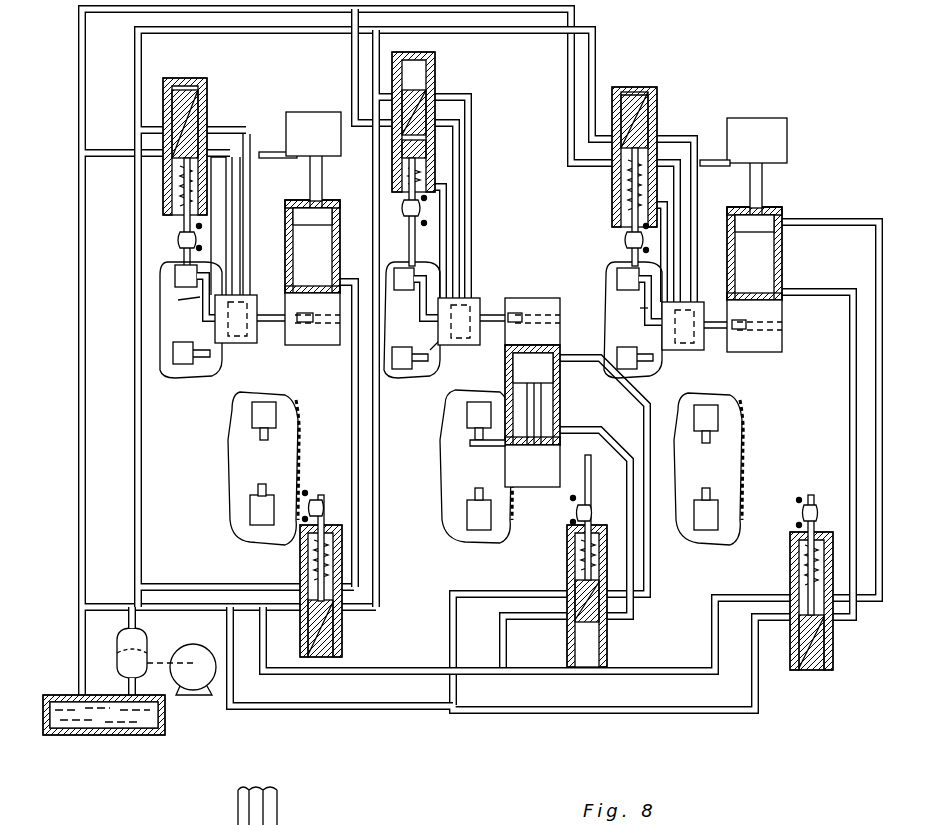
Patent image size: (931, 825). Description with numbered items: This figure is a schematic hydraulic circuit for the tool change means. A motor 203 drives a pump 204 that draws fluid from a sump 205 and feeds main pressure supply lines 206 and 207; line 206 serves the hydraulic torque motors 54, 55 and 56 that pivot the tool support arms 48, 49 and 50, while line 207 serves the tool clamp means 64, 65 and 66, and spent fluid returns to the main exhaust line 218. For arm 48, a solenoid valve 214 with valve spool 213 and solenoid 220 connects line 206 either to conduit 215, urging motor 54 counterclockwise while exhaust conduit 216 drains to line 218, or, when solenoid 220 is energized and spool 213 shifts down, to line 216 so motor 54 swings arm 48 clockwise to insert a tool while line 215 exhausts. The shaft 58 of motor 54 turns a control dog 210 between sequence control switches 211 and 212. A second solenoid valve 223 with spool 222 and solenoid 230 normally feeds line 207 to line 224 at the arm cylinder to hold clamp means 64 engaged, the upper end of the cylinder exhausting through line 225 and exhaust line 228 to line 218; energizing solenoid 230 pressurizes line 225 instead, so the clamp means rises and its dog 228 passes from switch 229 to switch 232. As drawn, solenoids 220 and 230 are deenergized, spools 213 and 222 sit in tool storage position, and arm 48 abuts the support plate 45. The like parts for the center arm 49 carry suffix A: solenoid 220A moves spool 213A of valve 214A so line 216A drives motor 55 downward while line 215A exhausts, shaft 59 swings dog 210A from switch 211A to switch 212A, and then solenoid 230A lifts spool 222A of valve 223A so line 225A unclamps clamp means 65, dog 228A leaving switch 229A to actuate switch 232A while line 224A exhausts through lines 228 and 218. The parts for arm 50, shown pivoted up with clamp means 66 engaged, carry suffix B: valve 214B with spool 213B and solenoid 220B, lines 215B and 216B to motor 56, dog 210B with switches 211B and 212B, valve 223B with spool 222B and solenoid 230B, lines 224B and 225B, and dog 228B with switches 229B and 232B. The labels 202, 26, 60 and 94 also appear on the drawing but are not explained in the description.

The hydraulic control system 202 is at (600, 52).
The motor 203 is at (193, 690).
The pump 204 is at (148, 645).
The sump 205 is at (125, 735).
The main pressure supply line 206 is at (135, 405).
The main pressure supply line 207 is at (330, 715).
The control dog 210 is at (200, 300).
The dog 210A is at (440, 345).
The dog 210B is at (645, 308).
The sequence control switch 211 is at (175, 276).
The switch 211A is at (414, 275).
The sequence control switch 211B is at (622, 280).
The sequence control switch 212 is at (173, 353).
The switch 212A is at (392, 365).
The sequence control switch 212B is at (625, 365).
The valve spool 213 is at (170, 90).
The valve spool 213A is at (420, 95).
The valve spool 213B is at (645, 72).
The solenoid valve 214 is at (213, 108).
The solenoid valve 214A is at (442, 96).
The solenoid valve 214B is at (663, 118).
The conduit 215 is at (228, 135).
The line 215A is at (471, 113).
The conduit 215B is at (677, 135).
The exhaust conduit 216 is at (218, 160).
The line 216A is at (458, 155).
The conduit 216B is at (673, 188).
The main exhaust line 218 is at (78, 185).
The solenoid 220 is at (180, 238).
The solenoid 220A is at (418, 210).
The solenoid 220B is at (627, 240).
The valve spool 222 is at (340, 630).
The valve spool 222A is at (607, 645).
The valve spool 222B is at (810, 668).
The solenoid valve 223 is at (300, 554).
The solenoid valve 223A is at (563, 636).
The solenoid valve 223B is at (790, 583).
The line 224 is at (351, 394).
The line 224A is at (650, 574).
The line 224B is at (850, 375).
The exhaust line 225 is at (380, 584).
The line 225A is at (634, 615).
The line 225B is at (812, 223).
The exhaust line 228 is at (370, 674).
The dog 228A is at (485, 445).
The dog 228B is at (702, 160).
The sequence control switch 229 is at (262, 522).
The sequence control switch 229A is at (478, 518).
The sequence control switch 229B is at (718, 522).
The solenoid 230 is at (322, 500).
The solenoid 230A is at (570, 530).
The solenoid 230B is at (840, 485).
The sequence control switch 232 is at (260, 428).
The sequence control switch 232A is at (475, 424).
The sequence control switch 232B is at (718, 418).
The control unit 26 is at (485, 467).
The support plate 45 is at (411, 320).
The tool support arm 48 is at (290, 236).
The tool support arm 49 is at (560, 403).
The tool support arm 50 is at (784, 262).
The hydraulic torque motor 54 is at (258, 346).
The hydraulic torque motor 55 is at (482, 280).
The hydraulic torque motor 56 is at (685, 345).
The shaft 58 is at (280, 332).
The motor shaft 59 is at (542, 310).
The cylinder lower chamber 60 is at (784, 325).
The tool clamp means 64 is at (313, 134).
The tool clamp means 65 is at (532, 466).
The tool clamp means 66 is at (757, 140).
The connector 94 is at (277, 815).